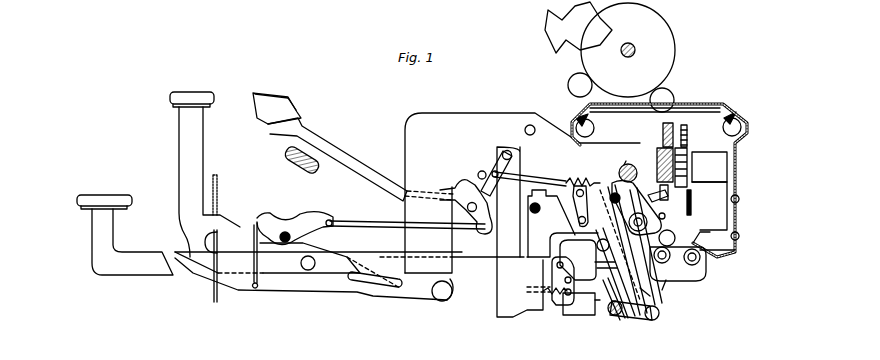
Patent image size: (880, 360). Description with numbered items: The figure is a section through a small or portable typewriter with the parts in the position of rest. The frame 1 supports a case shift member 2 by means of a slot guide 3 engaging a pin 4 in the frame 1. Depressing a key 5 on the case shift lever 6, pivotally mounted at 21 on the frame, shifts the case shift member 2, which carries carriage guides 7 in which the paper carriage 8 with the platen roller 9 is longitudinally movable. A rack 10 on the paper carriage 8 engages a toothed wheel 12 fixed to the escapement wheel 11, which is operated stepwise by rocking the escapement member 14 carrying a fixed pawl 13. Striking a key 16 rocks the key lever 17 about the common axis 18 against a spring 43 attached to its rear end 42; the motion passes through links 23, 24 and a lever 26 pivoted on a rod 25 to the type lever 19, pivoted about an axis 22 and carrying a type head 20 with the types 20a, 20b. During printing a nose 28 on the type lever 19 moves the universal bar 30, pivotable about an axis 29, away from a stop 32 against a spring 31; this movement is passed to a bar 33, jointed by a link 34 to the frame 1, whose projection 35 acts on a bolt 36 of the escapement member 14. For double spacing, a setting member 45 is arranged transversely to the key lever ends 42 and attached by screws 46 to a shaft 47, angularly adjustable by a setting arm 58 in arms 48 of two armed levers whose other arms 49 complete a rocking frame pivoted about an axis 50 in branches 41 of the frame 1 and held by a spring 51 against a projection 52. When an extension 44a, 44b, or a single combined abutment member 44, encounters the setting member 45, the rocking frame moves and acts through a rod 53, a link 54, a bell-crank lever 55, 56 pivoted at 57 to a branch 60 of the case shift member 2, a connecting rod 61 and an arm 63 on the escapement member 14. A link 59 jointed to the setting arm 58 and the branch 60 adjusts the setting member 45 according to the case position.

The frame 1 is at (507, 299).
The case shift member 2 is at (455, 124).
The slot guide 3 is at (619, 173).
The pin 4 is at (624, 165).
The case shift key 5 is at (113, 197).
The case shift lever 6 is at (136, 260).
The carriage guides 7 is at (596, 128).
The paper carriage 8 is at (659, 170).
The platen roller 9 is at (675, 50).
The rack 10 is at (663, 140).
The escapement wheel 11 is at (687, 137).
The toothed wheel 12 is at (657, 166).
The fixed pawl 13 is at (668, 192).
The escapement member 14 is at (669, 246).
The key 16 is at (208, 94).
The key lever 17 is at (192, 157).
The common axis 18 is at (530, 208).
The type lever 19 is at (355, 170).
The type head 20 is at (262, 110).
The type 20a is at (290, 101).
The type 20b is at (260, 92).
The pivot 21 is at (314, 258).
The axis 22 is at (467, 207).
The link 23 is at (256, 241).
The link 24 is at (353, 221).
The rod 25 is at (284, 232).
The lever 26 is at (312, 220).
The nose 28 is at (458, 190).
The axis 29 is at (507, 150).
The universal bar 30 is at (482, 192).
The spring 31 is at (566, 181).
The stop 32 is at (482, 171).
The bar 33 is at (535, 176).
The link 34 is at (572, 201).
The projection 35 is at (636, 208).
The bolt 36 is at (659, 204).
The branches 41 is at (572, 260).
The rear end 42 is at (555, 297).
The spring 43 is at (536, 297).
The abutment member 44 is at (566, 316).
The extension 44a is at (571, 282).
The extension 44b is at (596, 312).
The setting member 45 is at (610, 315).
The screws 46 is at (648, 321).
The shaft 47 is at (631, 321).
The arms 48 is at (620, 299).
The arms 49 is at (612, 245).
The axis 50 is at (597, 245).
The spring 51 is at (599, 260).
The projection 52 is at (615, 273).
The rod 53 is at (610, 198).
The link 54 is at (627, 250).
The bell-crank lever 55 is at (646, 246).
The bell-crank lever 56 is at (685, 283).
The pivot 57 is at (681, 262).
The setting arm 58 is at (649, 299).
The link 59 is at (671, 295).
The branch 60 is at (708, 257).
The connecting rod 61 is at (705, 236).
The rock lever 63 is at (696, 196).